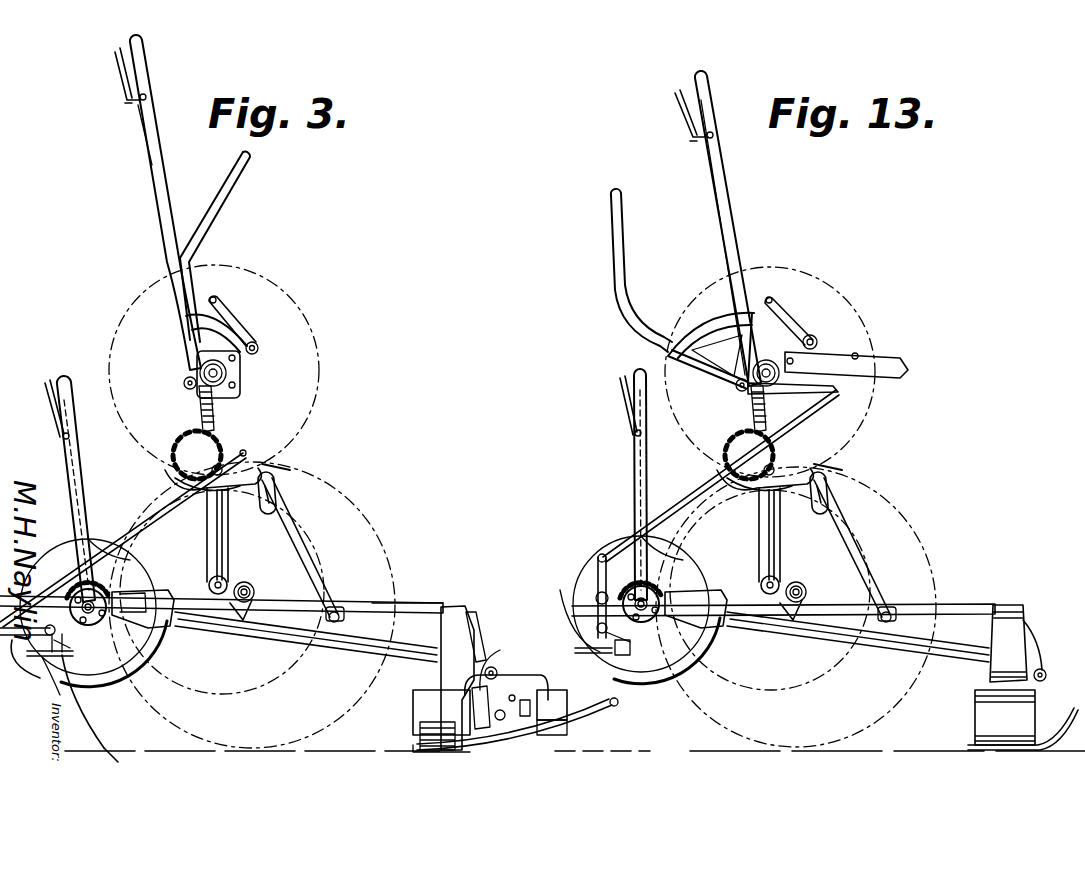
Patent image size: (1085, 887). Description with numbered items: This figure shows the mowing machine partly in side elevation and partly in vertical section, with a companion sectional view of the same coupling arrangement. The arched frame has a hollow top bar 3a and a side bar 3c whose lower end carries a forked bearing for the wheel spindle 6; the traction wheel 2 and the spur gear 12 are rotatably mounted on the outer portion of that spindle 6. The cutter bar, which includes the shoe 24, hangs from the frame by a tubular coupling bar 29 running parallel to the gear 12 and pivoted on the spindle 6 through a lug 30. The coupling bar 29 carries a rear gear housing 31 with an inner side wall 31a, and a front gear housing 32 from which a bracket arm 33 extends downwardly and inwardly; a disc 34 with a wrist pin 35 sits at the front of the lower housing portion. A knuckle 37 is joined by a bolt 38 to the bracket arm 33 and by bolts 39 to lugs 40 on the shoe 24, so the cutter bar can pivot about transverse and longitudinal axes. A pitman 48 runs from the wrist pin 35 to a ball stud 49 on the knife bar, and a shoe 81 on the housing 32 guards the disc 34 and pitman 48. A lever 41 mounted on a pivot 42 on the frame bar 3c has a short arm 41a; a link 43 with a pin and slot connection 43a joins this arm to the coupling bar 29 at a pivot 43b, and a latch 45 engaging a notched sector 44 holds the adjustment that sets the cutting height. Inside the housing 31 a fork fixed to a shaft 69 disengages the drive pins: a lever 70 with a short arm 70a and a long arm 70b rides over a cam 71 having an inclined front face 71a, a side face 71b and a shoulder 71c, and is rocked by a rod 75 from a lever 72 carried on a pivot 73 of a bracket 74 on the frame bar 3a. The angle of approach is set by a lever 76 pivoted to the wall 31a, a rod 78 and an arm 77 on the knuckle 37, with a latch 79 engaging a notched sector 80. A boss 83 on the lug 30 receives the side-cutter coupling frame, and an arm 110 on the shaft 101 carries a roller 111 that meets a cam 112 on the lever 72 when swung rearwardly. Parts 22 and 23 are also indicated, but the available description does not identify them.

In FIG. 3, the traction wheel 2 is at (388, 557).
In FIG. 13, the traction wheel 2 is at (940, 548).
In FIG. 3, the top bar 3a is at (241, 370).
In FIG. 13, the top bar 3a is at (872, 360).
In FIG. 3, the side bar 3c is at (229, 522).
In FIG. 13, the side bar 3c is at (782, 525).
In FIG. 3, the wheel spindle 6 is at (228, 582).
In FIG. 13, the wheel spindle 6 is at (782, 582).
In FIG. 3, the spur gear 12 is at (278, 680).
In FIG. 13, the spur gear 12 is at (833, 677).
In FIG. 3, the upper wheel outline 22 is at (322, 355).
In FIG. 13, the upper wheel outline 22 is at (876, 327).
In FIG. 3, the pivot pin 23 is at (200, 372).
In FIG. 13, the pivot pin 23 is at (767, 360).
In FIG. 3, the shoe 24 is at (595, 712).
In FIG. 3, the tubular coupling bar 29 is at (320, 650).
In FIG. 13, the tubular coupling bar 29 is at (812, 632).
In FIG. 3, the lug 30 is at (218, 615).
In FIG. 13, the lug 30 is at (777, 620).
In FIG. 3, the gear housing 31 is at (160, 682).
In FIG. 13, the gear housing 31 is at (700, 650).
In FIG. 3, the inner side wall 31a is at (160, 640).
In FIG. 13, the inner side wall 31a is at (565, 600).
In FIG. 3, the gear housing 32 is at (450, 612).
In FIG. 13, the gear housing 32 is at (998, 622).
In FIG. 3, the bracket arm 33 is at (492, 666).
In FIG. 13, the bracket arm 33 is at (1032, 650).
In FIG. 3, the disc 34 is at (487, 705).
In FIG. 13, the disc 34 is at (1010, 717).
In FIG. 3, the wrist pin 35 is at (514, 698).
In FIG. 13, the wrist pin 35 is at (1046, 672).
In FIG. 3, the knuckle 37 is at (527, 673).
In FIG. 3, the bolt 38 is at (484, 680).
In FIG. 3, the bolts 39 is at (420, 700).
In FIG. 3, the lugs 40 is at (425, 730).
In FIG. 3, the lever 41 is at (168, 222).
In FIG. 13, the lever 41 is at (722, 183).
In FIG. 3, the short arm 41a is at (275, 467).
In FIG. 13, the short arm 41a is at (840, 452).
In FIG. 3, the pivot 42 is at (175, 479).
In FIG. 13, the pivot 42 is at (760, 492).
In FIG. 3, the link 43 is at (306, 548).
In FIG. 13, the link 43 is at (870, 522).
In FIG. 3, the pin and slot connection 43a is at (282, 484).
In FIG. 13, the pin and slot connection 43a is at (832, 480).
In FIG. 3, the pivot 43b is at (388, 614).
In FIG. 13, the pivot 43b is at (915, 610).
In FIG. 3, the notched sector 44 is at (172, 448).
In FIG. 13, the notched sector 44 is at (724, 450).
In FIG. 3, the latch 45 is at (197, 420).
In FIG. 13, the latch 45 is at (749, 420).
In FIG. 3, the pitman 48 is at (530, 702).
In FIG. 3, the ball stud 49 is at (503, 720).
In FIG. 3, the shaft 69 is at (85, 716).
In FIG. 13, the shaft 69 is at (632, 638).
In FIG. 3, the lever 70 is at (40, 598).
In FIG. 13, the lever 70 is at (660, 612).
In FIG. 3, the short arm 70a is at (140, 660).
In FIG. 13, the short arm 70a is at (660, 698).
In FIG. 3, the long arm 70b is at (36, 676).
In FIG. 13, the long arm 70b is at (600, 562).
In FIG. 3, the cam 71 is at (85, 668).
In FIG. 13, the cam 71 is at (625, 662).
In FIG. 3, the front face 71a is at (72, 650).
In FIG. 13, the front face 71a is at (630, 650).
In FIG. 3, the side face 71b is at (112, 762).
In FIG. 3, the shoulder 71c is at (62, 700).
In FIG. 3, the lever 72 is at (220, 196).
In FIG. 13, the lever 72 is at (618, 290).
In FIG. 3, the pivot 73 is at (184, 384).
In FIG. 13, the pivot 73 is at (736, 385).
In FIG. 3, the bracket 74 is at (236, 378).
In FIG. 13, the bracket 74 is at (785, 375).
In FIG. 3, the rod 75 is at (152, 508).
In FIG. 13, the rod 75 is at (700, 500).
In FIG. 3, the lever 76 is at (68, 482).
In FIG. 13, the lever 76 is at (634, 475).
In FIG. 3, the arm 77 is at (470, 630).
In FIG. 3, the rod 78 is at (378, 606).
In FIG. 3, the latch 79 is at (135, 564).
In FIG. 13, the latch 79 is at (690, 568).
In FIG. 3, the notched sector 80 is at (66, 584).
In FIG. 13, the notched sector 80 is at (660, 585).
In FIG. 3, the shoe 81 is at (445, 752).
In FIG. 13, the shoe 81 is at (1055, 748).
In FIG. 3, the boss 83 is at (254, 591).
In FIG. 13, the boss 83 is at (808, 594).
In FIG. 3, the shaft 101 is at (258, 343).
In FIG. 13, the shaft 101 is at (822, 338).
In FIG. 3, the arm 110 is at (262, 297).
In FIG. 13, the arm 110 is at (808, 300).
In FIG. 3, the roller 111 is at (222, 296).
In FIG. 13, the roller 111 is at (773, 296).
In FIG. 3, the cam 112 is at (203, 288).
In FIG. 13, the cam 112 is at (705, 303).